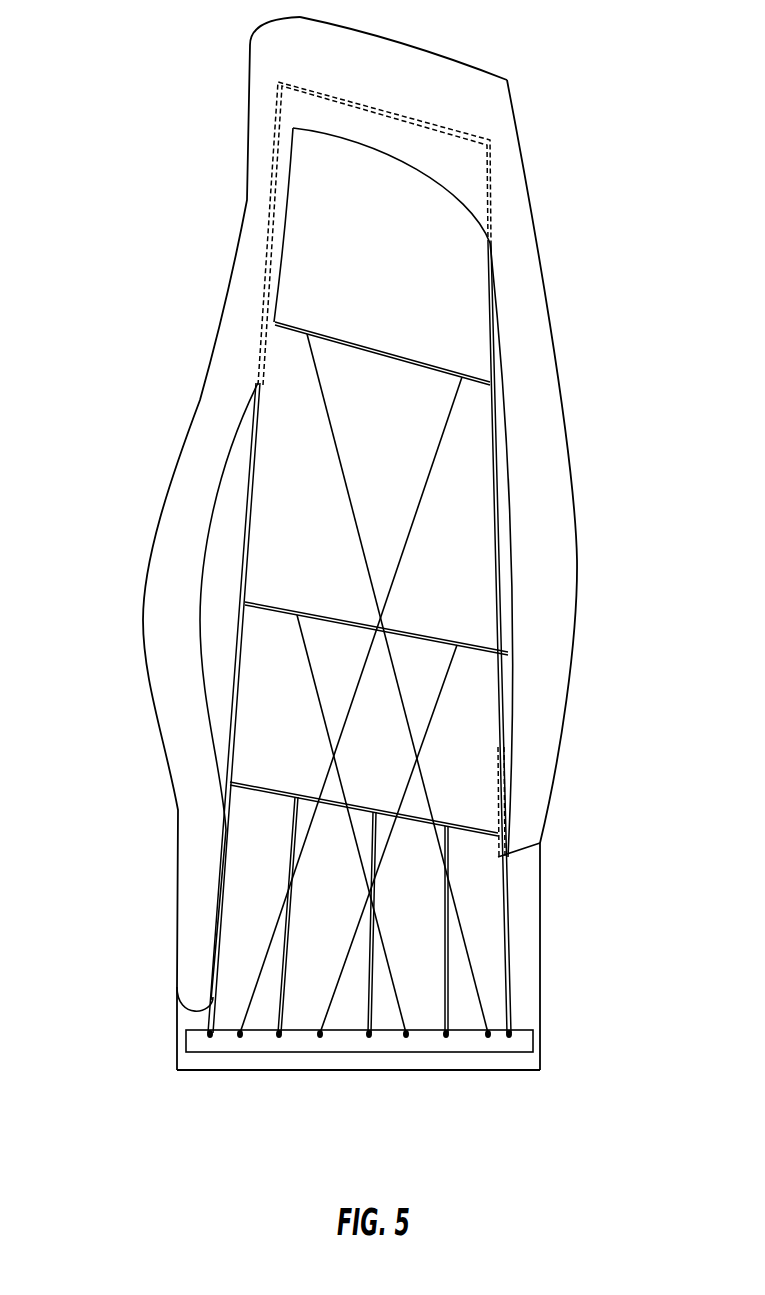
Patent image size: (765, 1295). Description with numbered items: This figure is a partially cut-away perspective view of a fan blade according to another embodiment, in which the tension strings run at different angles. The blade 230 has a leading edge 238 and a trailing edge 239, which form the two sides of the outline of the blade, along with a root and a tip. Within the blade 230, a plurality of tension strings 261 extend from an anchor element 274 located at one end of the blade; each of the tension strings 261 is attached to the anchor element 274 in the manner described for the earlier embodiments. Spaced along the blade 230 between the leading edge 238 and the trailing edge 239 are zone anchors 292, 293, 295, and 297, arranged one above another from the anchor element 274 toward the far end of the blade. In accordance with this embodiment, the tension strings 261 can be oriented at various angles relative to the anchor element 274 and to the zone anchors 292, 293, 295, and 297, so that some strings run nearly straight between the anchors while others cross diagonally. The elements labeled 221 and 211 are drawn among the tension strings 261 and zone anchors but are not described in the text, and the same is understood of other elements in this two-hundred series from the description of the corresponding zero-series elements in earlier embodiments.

The blade 230 is at (138, 339).
The leading edge 238 is at (158, 527).
The trailing edge 239 is at (556, 318).
The zone anchor 297 is at (437, 123).
The zone anchor 295 is at (287, 324).
The zone anchor 293 is at (423, 633).
The zone anchor 292 is at (478, 827).
The tension strings 261 is at (497, 502).
The cross braces 221 is at (270, 937).
The diagonal struts 211 is at (315, 683).
The anchor element 274 is at (525, 1040).